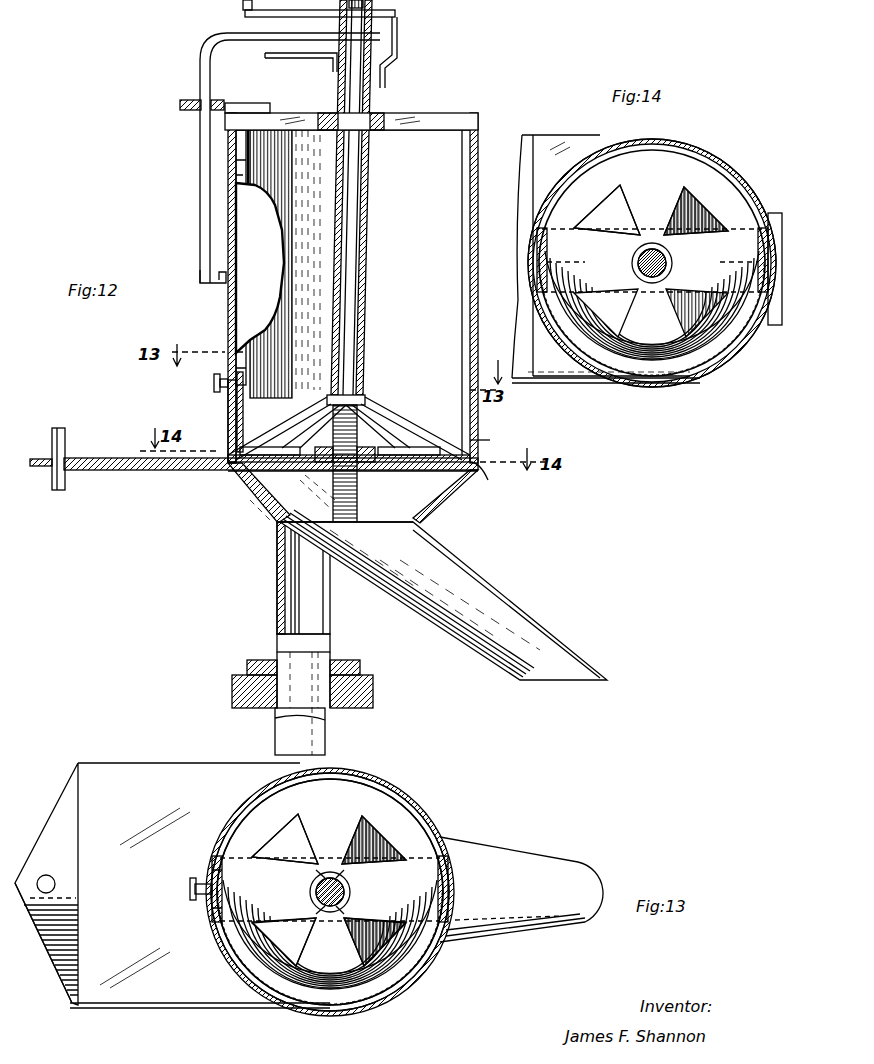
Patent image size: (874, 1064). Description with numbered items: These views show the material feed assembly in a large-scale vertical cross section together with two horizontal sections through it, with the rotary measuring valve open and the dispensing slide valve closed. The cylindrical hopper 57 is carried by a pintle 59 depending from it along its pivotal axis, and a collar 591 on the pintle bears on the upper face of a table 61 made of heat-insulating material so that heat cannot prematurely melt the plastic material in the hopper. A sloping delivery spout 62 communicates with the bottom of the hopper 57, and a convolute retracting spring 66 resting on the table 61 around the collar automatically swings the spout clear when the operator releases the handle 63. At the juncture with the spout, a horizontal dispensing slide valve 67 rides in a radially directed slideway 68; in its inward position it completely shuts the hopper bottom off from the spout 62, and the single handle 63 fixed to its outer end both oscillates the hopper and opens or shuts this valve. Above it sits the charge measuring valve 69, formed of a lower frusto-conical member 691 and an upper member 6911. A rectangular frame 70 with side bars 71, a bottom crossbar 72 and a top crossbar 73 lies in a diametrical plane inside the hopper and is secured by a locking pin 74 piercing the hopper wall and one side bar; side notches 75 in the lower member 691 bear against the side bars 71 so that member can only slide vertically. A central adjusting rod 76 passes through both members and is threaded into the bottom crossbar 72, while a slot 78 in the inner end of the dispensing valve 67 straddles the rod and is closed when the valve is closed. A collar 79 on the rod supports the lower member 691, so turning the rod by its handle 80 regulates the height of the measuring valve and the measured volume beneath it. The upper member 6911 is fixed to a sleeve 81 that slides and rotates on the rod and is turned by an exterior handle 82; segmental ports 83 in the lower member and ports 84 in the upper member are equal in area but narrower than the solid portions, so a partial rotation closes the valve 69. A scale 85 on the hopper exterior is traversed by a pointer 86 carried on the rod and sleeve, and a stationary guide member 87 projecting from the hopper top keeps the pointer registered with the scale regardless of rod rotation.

In FIG. 12, the hopper 57 is at (228, 326).
In FIG. 14, the hopper 57 is at (745, 178).
In FIG. 12, the pintle 59 is at (278, 612).
In FIG. 12, the collar 591 is at (272, 652).
In FIG. 12, the table 61 is at (373, 690).
In FIG. 14, the table 61 is at (522, 384).
In FIG. 12, the delivery spout 62 is at (398, 600).
In FIG. 14, the delivery spout 62 is at (772, 322).
In FIG. 13, the delivery spout 62 is at (562, 860).
In FIG. 12, the handle 63 is at (65, 446).
In FIG. 13, the handle 63 is at (55, 884).
In FIG. 12, the retracting spring 66 is at (360, 664).
In FIG. 12, the dispensing slide valve 67 is at (78, 470).
In FIG. 13, the dispensing slide valve 67 is at (65, 950).
In FIG. 12, the slideway 68 is at (132, 458).
In FIG. 14, the slideway 68 is at (560, 382).
In FIG. 13, the slideway 68 is at (196, 764).
In FIG. 12, the charge measuring valve 69 is at (368, 396).
In FIG. 13, the charge measuring valve 69 is at (268, 988).
In FIG. 12, the lower member of measuring valve 691 is at (495, 481).
In FIG. 14, the lower member of measuring valve 691 is at (700, 162).
In FIG. 13, the lower member of measuring valve 691 is at (372, 778).
In FIG. 12, the upper member of measuring valve 6911 is at (500, 435).
In FIG. 13, the upper member of measuring valve 6911 is at (398, 782).
In FIG. 12, the rectangular frame 70 is at (450, 190).
In FIG. 12, the side bars 71 is at (228, 400).
In FIG. 14, the side bars 71 is at (548, 240).
In FIG. 13, the side bars 71 is at (200, 895).
In FIG. 12, the bottom crossbar 72 is at (250, 480).
In FIG. 14, the bottom crossbar 72 is at (668, 200).
In FIG. 13, the bottom crossbar 72 is at (300, 874).
In FIG. 12, the top crossbar 73 is at (306, 113).
In FIG. 12, the locking pin 74 is at (215, 374).
In FIG. 13, the locking pin 74 is at (190, 884).
In FIG. 14, the side notches 75 is at (548, 268).
In FIG. 13, the side notches 75 is at (212, 866).
In FIG. 12, the adjusting rod 76 is at (368, 6).
In FIG. 14, the adjusting rod 76 is at (652, 249).
In FIG. 13, the adjusting rod 76 is at (330, 877).
In FIG. 12, the slot 78 is at (415, 522).
In FIG. 13, the slot 78 is at (445, 832).
In FIG. 12, the collar 79 is at (368, 402).
In FIG. 12, the handle 80 is at (250, 12).
In FIG. 12, the sleeve 81 is at (397, 58).
In FIG. 13, the sleeve 81 is at (330, 912).
In FIG. 12, the handle 82 is at (265, 56).
In FIG. 12, the ports 83 is at (270, 400).
In FIG. 14, the ports 83 is at (625, 195).
In FIG. 13, the ports 83 is at (270, 830).
In FIG. 12, the ports 84 is at (330, 406).
In FIG. 13, the ports 84 is at (312, 840).
In FIG. 12, the scale of measurement 85 is at (236, 226).
In FIG. 12, the pointer 86 is at (200, 266).
In FIG. 12, the stationary guide member 87 is at (184, 100).